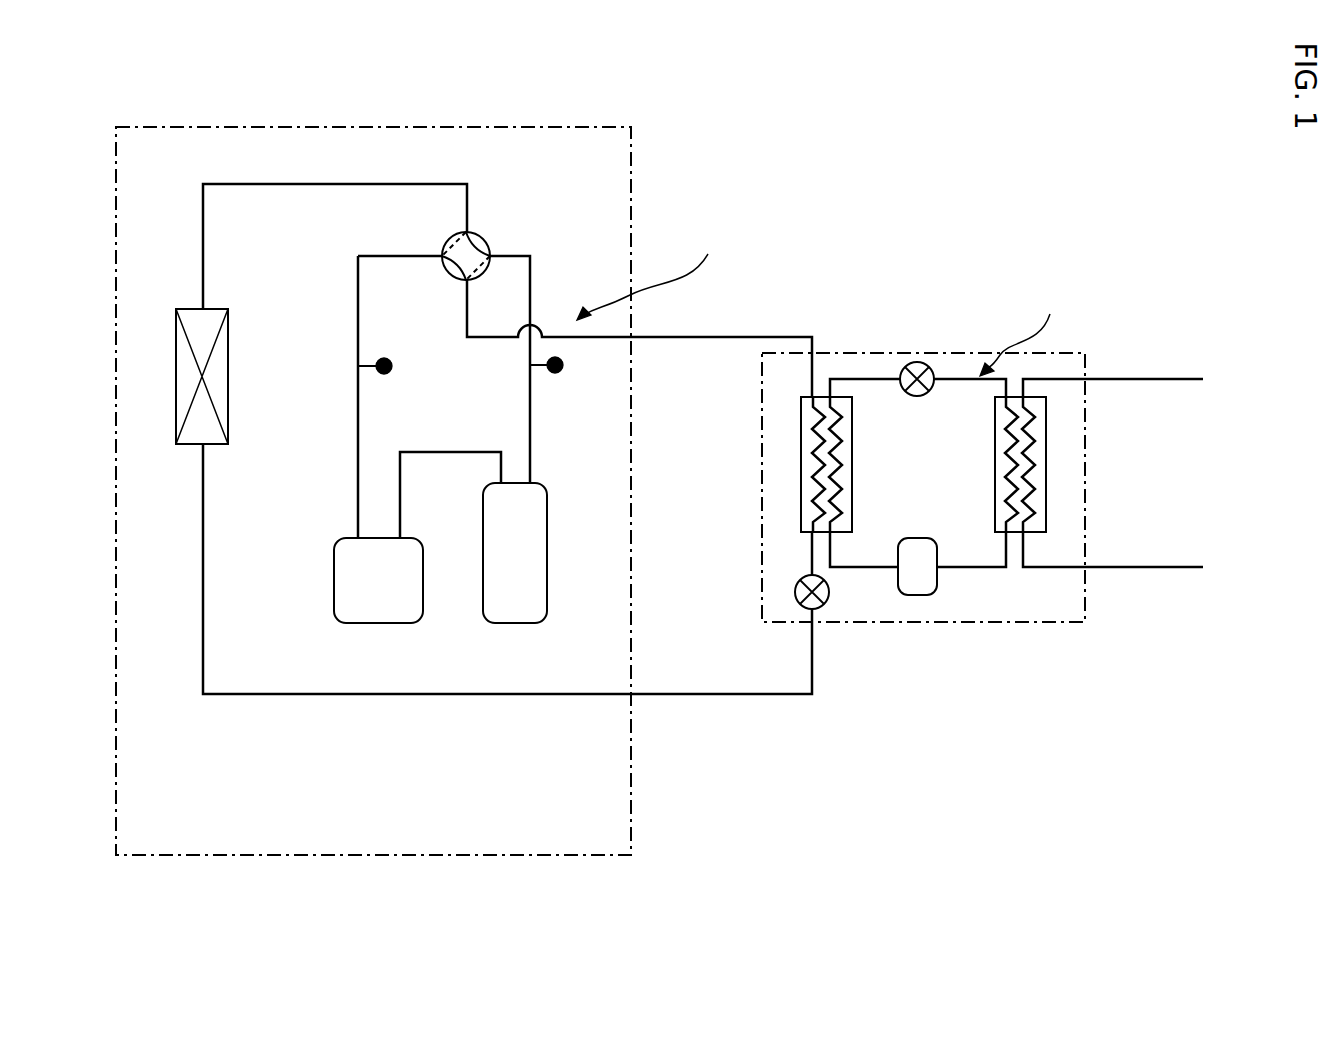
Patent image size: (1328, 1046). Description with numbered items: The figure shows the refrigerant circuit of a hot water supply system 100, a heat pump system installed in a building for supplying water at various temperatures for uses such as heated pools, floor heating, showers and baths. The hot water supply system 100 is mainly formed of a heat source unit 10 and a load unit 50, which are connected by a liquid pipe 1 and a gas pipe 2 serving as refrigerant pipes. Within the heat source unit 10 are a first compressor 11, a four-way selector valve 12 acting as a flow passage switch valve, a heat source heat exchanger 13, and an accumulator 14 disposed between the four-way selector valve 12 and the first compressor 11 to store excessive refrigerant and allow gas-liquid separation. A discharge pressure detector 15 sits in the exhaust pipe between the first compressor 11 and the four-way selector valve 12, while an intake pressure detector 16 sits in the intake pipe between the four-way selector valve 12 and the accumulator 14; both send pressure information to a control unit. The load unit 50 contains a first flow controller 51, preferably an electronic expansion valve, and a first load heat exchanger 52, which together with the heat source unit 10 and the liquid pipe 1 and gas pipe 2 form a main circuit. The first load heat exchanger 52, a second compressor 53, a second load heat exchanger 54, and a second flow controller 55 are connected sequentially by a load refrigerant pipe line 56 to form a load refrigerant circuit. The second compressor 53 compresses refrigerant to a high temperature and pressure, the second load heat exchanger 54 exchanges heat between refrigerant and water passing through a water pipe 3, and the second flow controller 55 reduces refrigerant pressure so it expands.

The hot water supply system 100 is at (857, 230).
The heat source unit 10 is at (633, 212).
The load unit 50 is at (960, 353).
The liquid pipe 1 is at (676, 694).
The gas pipe 2 is at (688, 337).
The water pipe 3 is at (1135, 378).
The first compressor 11 is at (513, 623).
The four-way selector valve 12 is at (486, 240).
The heat source heat exchanger 13 is at (228, 375).
The accumulator 14 is at (375, 623).
The discharge pressure detector 15 is at (563, 365).
The intake pressure detector 16 is at (392, 366).
The first flow controller 51 is at (795, 592).
The first load heat exchanger 52 is at (801, 462).
The second compressor 53 is at (915, 595).
The second load heat exchanger 54 is at (995, 465).
The second flow controller 55 is at (917, 396).
The load refrigerant pipe line 56 is at (975, 567).